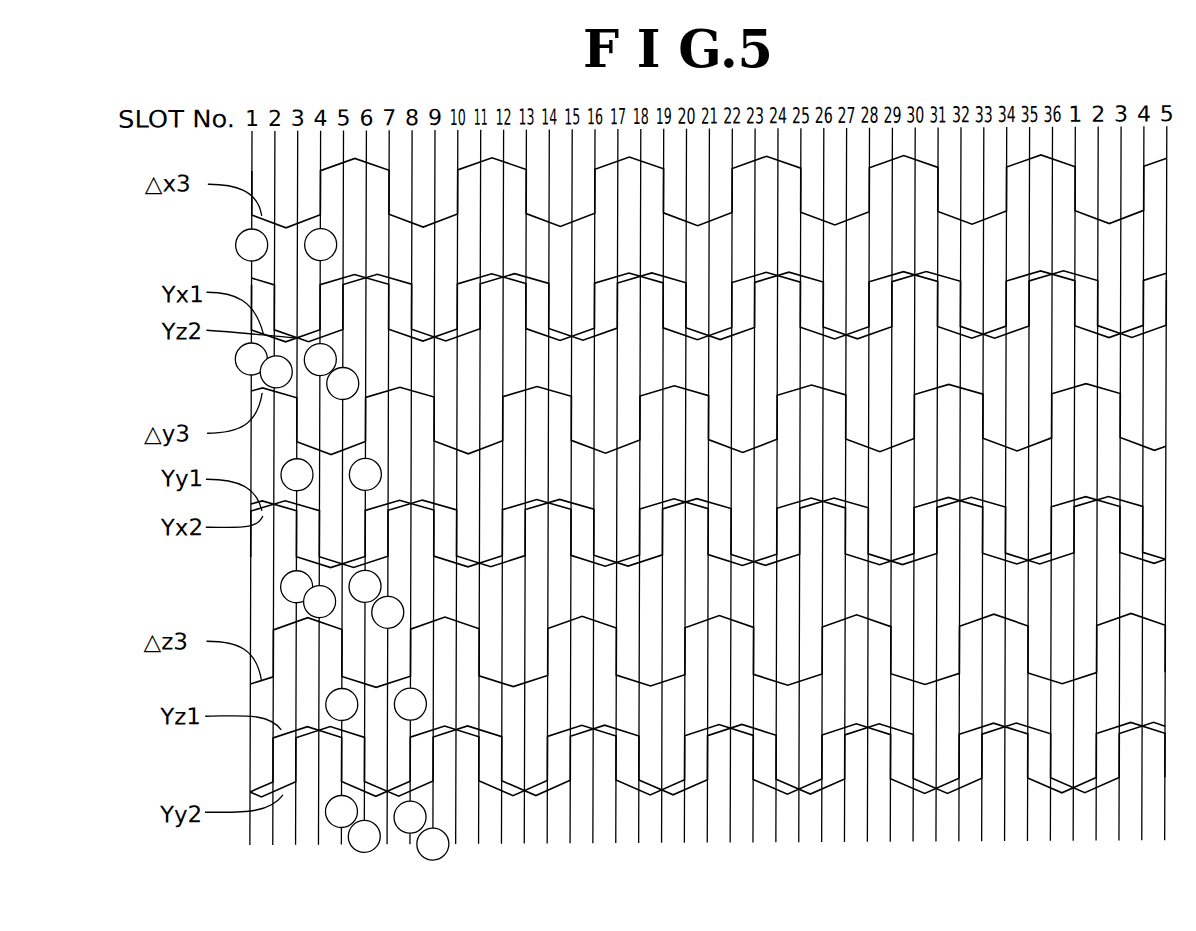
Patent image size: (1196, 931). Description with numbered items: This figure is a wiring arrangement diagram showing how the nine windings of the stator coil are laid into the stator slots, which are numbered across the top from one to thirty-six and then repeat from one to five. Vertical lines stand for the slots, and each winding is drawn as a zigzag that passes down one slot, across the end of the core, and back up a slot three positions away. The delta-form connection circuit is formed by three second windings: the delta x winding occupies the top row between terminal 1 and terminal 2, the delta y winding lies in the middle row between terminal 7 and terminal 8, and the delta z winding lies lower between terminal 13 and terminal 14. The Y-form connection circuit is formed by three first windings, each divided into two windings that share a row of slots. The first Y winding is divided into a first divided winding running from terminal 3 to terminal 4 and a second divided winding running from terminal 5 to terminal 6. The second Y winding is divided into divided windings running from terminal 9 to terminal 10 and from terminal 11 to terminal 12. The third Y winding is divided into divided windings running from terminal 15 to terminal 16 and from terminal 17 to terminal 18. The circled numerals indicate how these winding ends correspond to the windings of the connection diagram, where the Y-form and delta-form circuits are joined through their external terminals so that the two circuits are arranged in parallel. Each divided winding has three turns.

The winding terminal 1 is at (252, 245).
The winding terminal 2 is at (321, 245).
The winding terminal 3 is at (251, 359).
The winding terminal 4 is at (320, 360).
The winding terminal 5 is at (276, 372).
The winding terminal 6 is at (343, 383).
The winding terminal 7 is at (297, 475).
The winding terminal 8 is at (365, 474).
The winding terminal 9 is at (297, 587).
The winding terminal 10 is at (365, 586).
The winding terminal 11 is at (320, 602).
The winding terminal 12 is at (388, 612).
The winding terminal 13 is at (342, 704).
The winding terminal 14 is at (410, 704).
The winding terminal 15 is at (341, 811).
The winding terminal 16 is at (410, 817).
The winding terminal 17 is at (364, 836).
The winding terminal 18 is at (433, 844).